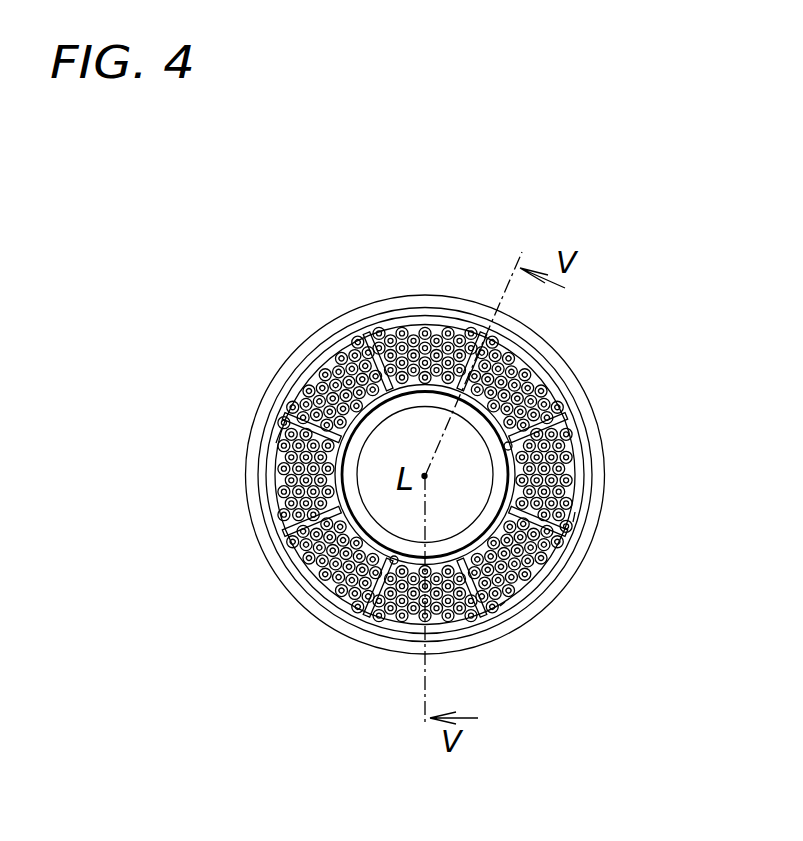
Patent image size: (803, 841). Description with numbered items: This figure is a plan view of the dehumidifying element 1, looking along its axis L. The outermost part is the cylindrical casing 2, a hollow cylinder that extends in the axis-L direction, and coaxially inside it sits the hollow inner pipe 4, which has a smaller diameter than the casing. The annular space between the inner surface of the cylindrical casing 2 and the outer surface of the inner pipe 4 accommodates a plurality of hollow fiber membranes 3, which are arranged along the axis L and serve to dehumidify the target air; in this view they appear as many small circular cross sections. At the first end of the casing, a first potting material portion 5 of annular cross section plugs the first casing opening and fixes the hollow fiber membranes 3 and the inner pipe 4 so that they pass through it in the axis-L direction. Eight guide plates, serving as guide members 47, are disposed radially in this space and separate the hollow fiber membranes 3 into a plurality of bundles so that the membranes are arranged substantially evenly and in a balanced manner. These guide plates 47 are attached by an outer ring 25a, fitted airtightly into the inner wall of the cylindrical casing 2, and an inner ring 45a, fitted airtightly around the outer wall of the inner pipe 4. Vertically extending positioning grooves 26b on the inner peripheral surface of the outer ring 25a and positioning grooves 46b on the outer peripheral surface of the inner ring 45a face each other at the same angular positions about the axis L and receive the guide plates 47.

The dehumidifying element 1 is at (267, 307).
The cylindrical casing 2 is at (295, 593).
The hollow fiber membranes 3 is at (533, 380).
The inner pipe 4 is at (420, 405).
The first potting material portion 5 is at (347, 355).
The outer ring 25a is at (277, 443).
The positioning grooves 26b is at (563, 417).
The inner ring 45a is at (565, 512).
The positioning grooves 46b is at (515, 450).
The guide members 47 is at (508, 598).